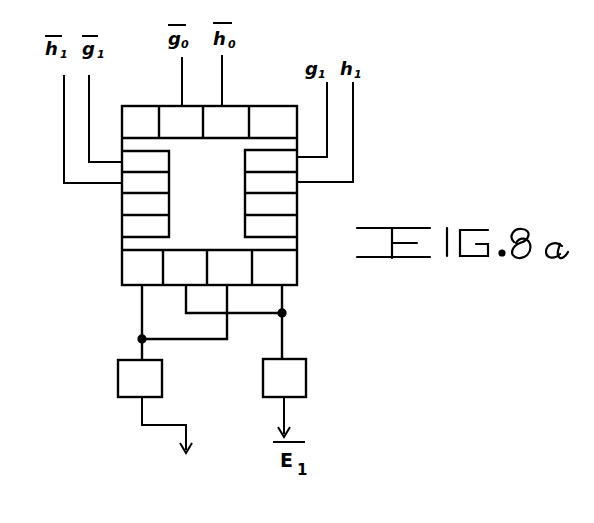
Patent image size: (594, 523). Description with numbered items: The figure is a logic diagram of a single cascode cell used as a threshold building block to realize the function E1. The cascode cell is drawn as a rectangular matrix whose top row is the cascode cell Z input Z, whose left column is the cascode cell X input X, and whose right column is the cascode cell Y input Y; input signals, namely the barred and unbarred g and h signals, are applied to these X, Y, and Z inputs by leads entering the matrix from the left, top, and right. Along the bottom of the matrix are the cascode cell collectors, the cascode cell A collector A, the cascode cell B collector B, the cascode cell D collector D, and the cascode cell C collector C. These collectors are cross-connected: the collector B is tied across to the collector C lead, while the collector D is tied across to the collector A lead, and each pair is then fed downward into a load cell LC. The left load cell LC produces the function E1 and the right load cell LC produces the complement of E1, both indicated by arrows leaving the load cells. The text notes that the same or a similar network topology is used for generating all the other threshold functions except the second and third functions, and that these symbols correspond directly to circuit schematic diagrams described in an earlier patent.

The cascode cell Z input Z is at (209, 122).
The cascode cell X input X is at (145, 194).
The cascode cell Y input Y is at (271, 193).
The cascode cell A collector A is at (142, 309).
The cascode cell B collector B is at (230, 285).
The cascode cell C collector C is at (275, 308).
The cascode cell D collector D is at (189, 298).
The load cell LC is at (212, 378).
The function E1 is at (174, 444).